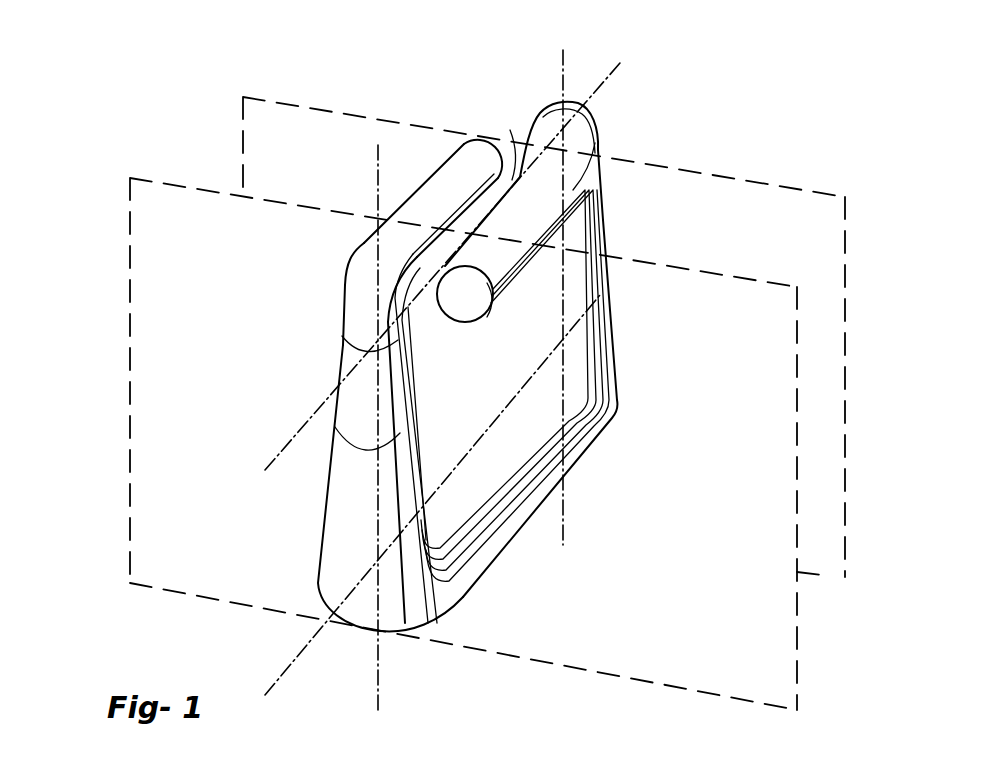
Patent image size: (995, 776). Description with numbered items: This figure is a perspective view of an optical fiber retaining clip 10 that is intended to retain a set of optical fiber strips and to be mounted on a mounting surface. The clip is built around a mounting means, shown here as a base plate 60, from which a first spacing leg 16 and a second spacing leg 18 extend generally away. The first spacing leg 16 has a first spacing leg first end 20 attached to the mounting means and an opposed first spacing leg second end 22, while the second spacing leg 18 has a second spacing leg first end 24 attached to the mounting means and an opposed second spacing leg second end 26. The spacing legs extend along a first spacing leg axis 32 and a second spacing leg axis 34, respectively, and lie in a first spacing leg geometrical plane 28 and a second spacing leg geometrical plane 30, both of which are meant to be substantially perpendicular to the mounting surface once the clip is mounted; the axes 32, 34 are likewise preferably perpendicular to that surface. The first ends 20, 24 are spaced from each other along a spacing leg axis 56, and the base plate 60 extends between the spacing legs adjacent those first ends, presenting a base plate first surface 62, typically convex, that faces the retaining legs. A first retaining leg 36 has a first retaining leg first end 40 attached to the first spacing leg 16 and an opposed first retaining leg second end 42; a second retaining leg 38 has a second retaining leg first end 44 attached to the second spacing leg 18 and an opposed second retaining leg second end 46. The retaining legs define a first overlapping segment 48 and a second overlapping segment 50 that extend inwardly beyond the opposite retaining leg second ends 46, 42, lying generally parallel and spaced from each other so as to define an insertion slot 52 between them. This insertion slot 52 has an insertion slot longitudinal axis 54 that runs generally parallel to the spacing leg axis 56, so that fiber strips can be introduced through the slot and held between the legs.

The retaining clip 10 is at (147, 116).
The first spacing leg 16 is at (610, 232).
The second spacing leg 18 is at (280, 487).
The first spacing leg first end 20 is at (617, 369).
The first spacing leg second end 22 is at (605, 143).
The second spacing leg first end 24 is at (317, 573).
The second spacing leg second end 26 is at (340, 322).
The first spacing leg geometrical plane 28 is at (296, 100).
The second spacing leg geometrical plane 30 is at (127, 215).
The first spacing leg axis 32 is at (570, 532).
The second spacing leg axis 34 is at (383, 685).
The first retaining leg 36 is at (540, 263).
The second retaining leg 38 is at (353, 167).
The first retaining leg first end 40 is at (605, 122).
The first retaining leg second end 42 is at (486, 329).
The second retaining leg first end 44 is at (357, 257).
The second retaining leg second end 46 is at (447, 125).
The first overlapping segment 48 is at (570, 190).
The second overlapping segment 50 is at (427, 193).
The insertion slot 52 is at (512, 142).
The insertion slot longitudinal axis 54 is at (618, 68).
The spacing leg axis 56 is at (293, 667).
The base plate 60 is at (580, 462).
The base plate first surface 62 is at (463, 500).